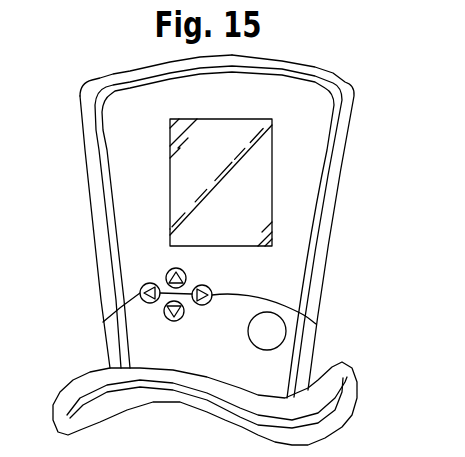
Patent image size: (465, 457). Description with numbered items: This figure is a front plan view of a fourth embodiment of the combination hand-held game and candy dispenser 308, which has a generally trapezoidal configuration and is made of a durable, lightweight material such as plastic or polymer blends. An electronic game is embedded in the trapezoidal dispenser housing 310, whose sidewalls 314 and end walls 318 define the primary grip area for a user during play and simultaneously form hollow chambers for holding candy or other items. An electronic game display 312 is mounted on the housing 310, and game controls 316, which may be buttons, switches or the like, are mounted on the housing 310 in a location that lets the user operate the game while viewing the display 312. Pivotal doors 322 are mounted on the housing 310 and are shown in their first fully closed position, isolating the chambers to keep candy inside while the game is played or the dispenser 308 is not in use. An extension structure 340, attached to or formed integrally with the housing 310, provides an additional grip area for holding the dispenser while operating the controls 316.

The combination hand-held game and candy dispenser 308 is at (302, 63).
The dispenser housing 310 is at (78, 99).
The electronic game display 312 is at (256, 178).
The sidewalls 314 is at (298, 233).
The game controls 316 is at (143, 286).
The end walls 318 is at (88, 193).
The pivotal doors 322 is at (133, 68).
The extension structure 340 is at (347, 421).